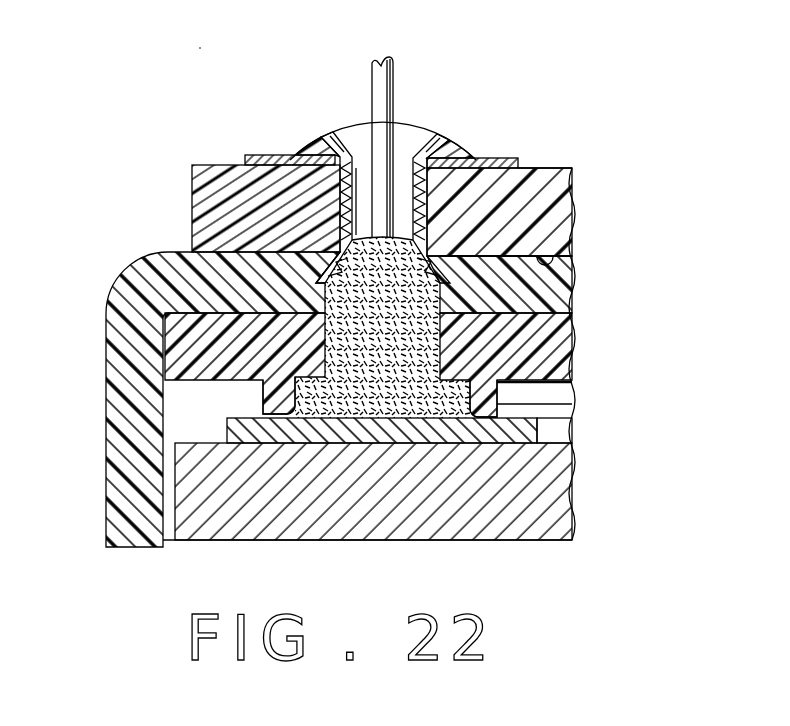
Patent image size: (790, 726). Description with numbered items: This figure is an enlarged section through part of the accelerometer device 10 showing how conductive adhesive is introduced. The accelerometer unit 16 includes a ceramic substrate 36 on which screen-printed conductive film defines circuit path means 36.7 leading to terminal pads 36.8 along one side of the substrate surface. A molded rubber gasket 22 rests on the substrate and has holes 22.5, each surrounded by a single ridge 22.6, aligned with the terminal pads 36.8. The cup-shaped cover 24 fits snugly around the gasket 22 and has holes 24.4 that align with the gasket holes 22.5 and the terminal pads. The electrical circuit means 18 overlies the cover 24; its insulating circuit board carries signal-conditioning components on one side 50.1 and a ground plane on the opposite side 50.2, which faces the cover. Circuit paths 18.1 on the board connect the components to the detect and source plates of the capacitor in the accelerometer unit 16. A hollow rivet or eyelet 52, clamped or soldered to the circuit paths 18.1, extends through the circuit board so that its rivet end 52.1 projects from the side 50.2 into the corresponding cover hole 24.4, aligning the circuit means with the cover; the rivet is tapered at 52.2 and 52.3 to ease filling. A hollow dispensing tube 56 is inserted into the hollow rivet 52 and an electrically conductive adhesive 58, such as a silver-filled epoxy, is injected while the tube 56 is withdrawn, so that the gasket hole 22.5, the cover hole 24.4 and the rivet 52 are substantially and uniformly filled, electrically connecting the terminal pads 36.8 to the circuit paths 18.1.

The accelerometer device 10 is at (103, 223).
The accelerometer unit 16 is at (547, 546).
The electrical circuit means 18 is at (570, 167).
The circuit paths 18.1 is at (252, 157).
The gasket 22 is at (576, 345).
The holes 22.5 is at (325, 331).
The ridge 22.6 is at (264, 398).
The cover 24 is at (104, 499).
The holes 24.4 is at (323, 293).
The substrate 36 is at (555, 500).
The circuit path means 36.7 is at (557, 438).
The terminal pads 36.8 is at (537, 430).
The one side of circuit board 50.1 is at (533, 168).
The opposite side of circuit board 50.2 is at (565, 255).
The hollow rivet 52 is at (452, 136).
The hollow rivet end 52.1 is at (330, 275).
The taper 52.2 is at (430, 142).
The taper 52.3 is at (530, 287).
The hollow dispensing tube 56 is at (383, 93).
The electrically conductive adhesive 58 is at (500, 382).